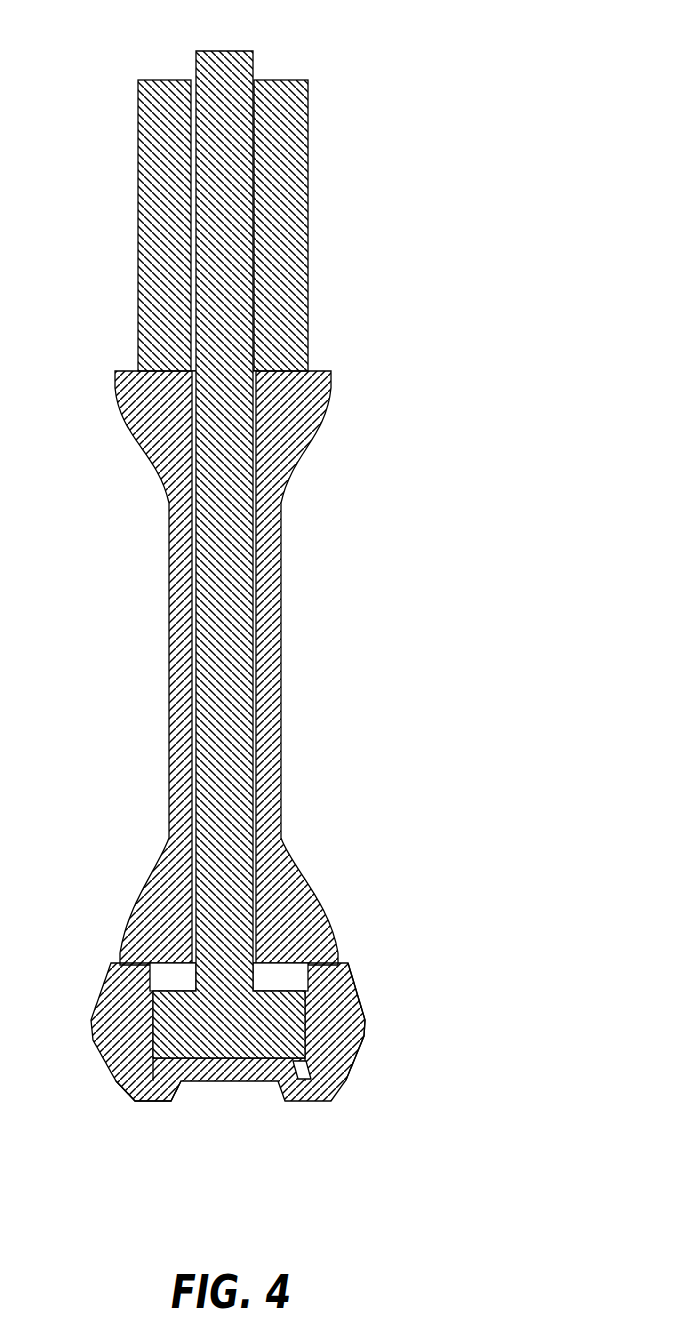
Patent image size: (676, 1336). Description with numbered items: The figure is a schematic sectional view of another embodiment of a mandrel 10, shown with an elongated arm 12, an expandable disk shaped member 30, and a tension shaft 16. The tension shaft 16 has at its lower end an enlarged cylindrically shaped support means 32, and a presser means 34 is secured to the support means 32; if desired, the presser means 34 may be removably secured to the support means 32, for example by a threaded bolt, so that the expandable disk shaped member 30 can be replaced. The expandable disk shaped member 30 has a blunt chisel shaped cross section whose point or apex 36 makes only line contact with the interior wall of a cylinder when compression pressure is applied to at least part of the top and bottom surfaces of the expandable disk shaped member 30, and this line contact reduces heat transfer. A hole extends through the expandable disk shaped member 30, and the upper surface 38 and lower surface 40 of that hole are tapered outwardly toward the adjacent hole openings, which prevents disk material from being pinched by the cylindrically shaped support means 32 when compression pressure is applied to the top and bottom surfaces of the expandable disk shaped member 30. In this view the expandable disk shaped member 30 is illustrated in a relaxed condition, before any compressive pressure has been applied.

The mandrel 10 is at (474, 170).
The elongated arm 12 is at (268, 610).
The tension shaft 16 is at (240, 53).
The expandable disk shaped member 30 is at (345, 970).
The cylindrically shaped support means 32 is at (129, 1093).
The presser means 34 is at (298, 1093).
The point or apex 36 is at (360, 1017).
The upper surface 38 is at (143, 960).
The lower surface 40 is at (258, 1077).